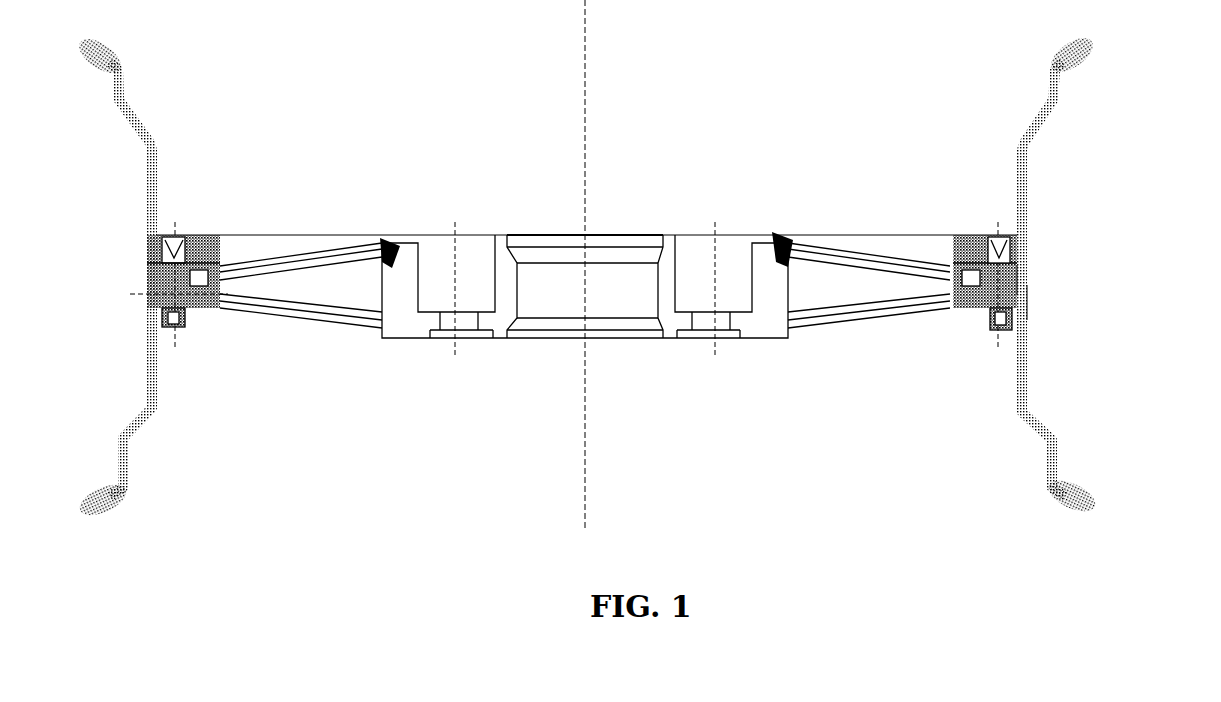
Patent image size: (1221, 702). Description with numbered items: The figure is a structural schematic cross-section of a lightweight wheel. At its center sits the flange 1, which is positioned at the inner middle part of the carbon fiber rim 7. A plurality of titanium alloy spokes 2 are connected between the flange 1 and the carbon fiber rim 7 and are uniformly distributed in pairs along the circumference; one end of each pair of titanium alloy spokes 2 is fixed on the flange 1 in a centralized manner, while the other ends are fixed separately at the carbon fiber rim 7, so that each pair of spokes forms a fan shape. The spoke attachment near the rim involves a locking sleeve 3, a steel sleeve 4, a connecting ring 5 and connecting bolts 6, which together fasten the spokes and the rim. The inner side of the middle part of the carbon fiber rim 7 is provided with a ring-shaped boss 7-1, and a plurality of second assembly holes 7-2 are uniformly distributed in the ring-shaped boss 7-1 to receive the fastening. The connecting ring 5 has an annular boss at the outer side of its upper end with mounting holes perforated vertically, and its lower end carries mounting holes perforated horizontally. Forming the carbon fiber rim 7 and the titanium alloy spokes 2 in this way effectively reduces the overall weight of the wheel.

The flange 1 is at (503, 263).
The titanium alloy spoke 2 is at (785, 255).
The locking sleeve 3 is at (948, 270).
The steel sleeve 4 is at (965, 270).
The connecting ring 5 is at (982, 245).
The connecting bolt 6 is at (997, 252).
The carbon fiber rim 7 is at (1058, 102).
The ring-shaped boss 7-1 is at (1023, 297).
The second assembly hole 7-2 is at (1005, 276).